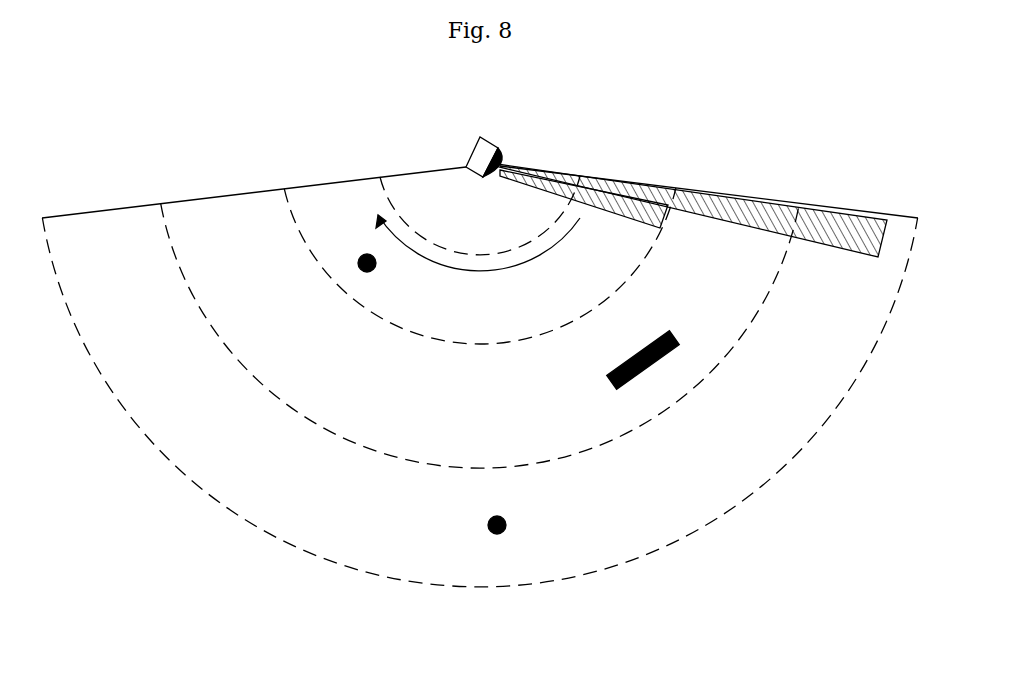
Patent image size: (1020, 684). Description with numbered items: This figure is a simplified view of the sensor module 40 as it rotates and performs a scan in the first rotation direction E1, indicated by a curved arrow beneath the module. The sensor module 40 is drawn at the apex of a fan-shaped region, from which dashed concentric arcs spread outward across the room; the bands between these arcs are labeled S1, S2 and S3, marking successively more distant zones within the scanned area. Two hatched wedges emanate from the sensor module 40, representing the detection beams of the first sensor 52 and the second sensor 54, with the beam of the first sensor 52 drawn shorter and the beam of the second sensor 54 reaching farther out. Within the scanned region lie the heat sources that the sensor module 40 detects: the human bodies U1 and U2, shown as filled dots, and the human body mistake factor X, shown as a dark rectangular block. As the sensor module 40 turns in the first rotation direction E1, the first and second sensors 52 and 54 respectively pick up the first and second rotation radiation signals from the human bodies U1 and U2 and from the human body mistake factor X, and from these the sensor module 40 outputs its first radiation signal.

The sensor module 40 is at (495, 137).
The first sensor 52 is at (633, 187).
The second sensor 54 is at (772, 212).
The first sensing area S1 is at (342, 209).
The second sensing area S2 is at (118, 243).
The third sensing area S3 is at (246, 227).
The first rotation direction E1 is at (478, 256).
The human body U1 is at (496, 537).
The human body U2 is at (367, 275).
The human body mistake factor X is at (660, 367).